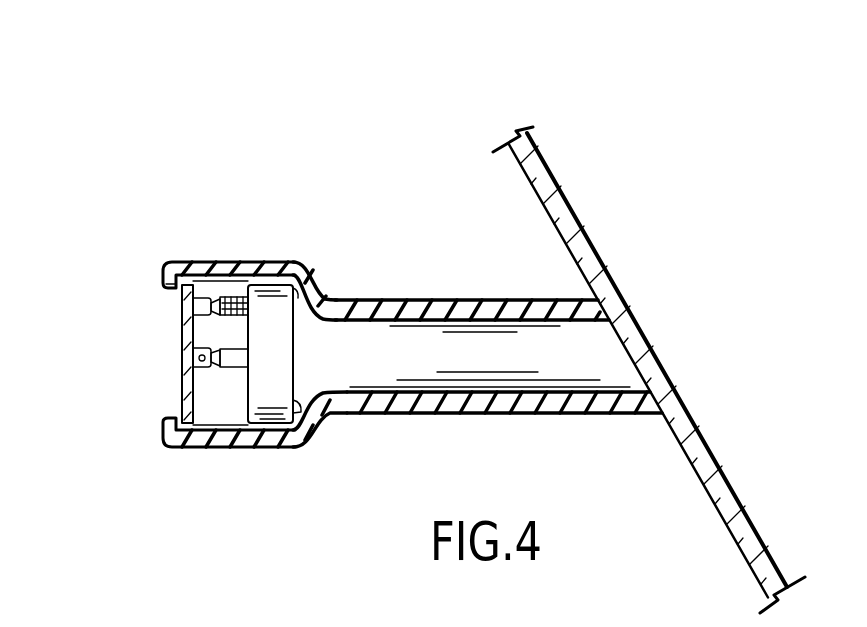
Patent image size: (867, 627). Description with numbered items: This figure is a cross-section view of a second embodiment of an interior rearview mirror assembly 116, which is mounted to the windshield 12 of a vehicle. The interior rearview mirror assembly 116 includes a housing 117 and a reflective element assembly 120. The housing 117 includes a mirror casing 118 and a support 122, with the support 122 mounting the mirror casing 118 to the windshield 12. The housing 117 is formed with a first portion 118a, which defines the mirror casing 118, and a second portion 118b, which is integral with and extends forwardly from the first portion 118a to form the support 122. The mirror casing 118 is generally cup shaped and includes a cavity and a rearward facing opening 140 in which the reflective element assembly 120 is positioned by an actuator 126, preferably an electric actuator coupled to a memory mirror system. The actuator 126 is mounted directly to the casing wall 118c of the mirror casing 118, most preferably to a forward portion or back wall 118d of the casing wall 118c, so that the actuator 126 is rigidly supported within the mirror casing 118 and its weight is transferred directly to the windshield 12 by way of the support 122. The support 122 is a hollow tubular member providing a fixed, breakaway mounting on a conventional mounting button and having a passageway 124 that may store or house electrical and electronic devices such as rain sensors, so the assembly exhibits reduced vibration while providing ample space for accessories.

The windshield 12 is at (517, 182).
The interior rearview mirror assembly 116 is at (360, 104).
The housing 117 is at (239, 226).
The mirror casing 118 is at (302, 343).
The first portion 118a is at (288, 260).
The second portion 118b is at (410, 413).
The casing wall 118c is at (294, 300).
The back wall 118d is at (317, 435).
The reflective element assembly 120 is at (150, 354).
The support 122 is at (447, 278).
The passageway 124 is at (507, 365).
The actuator 126 is at (257, 452).
The rearward facing opening 140 is at (167, 287).